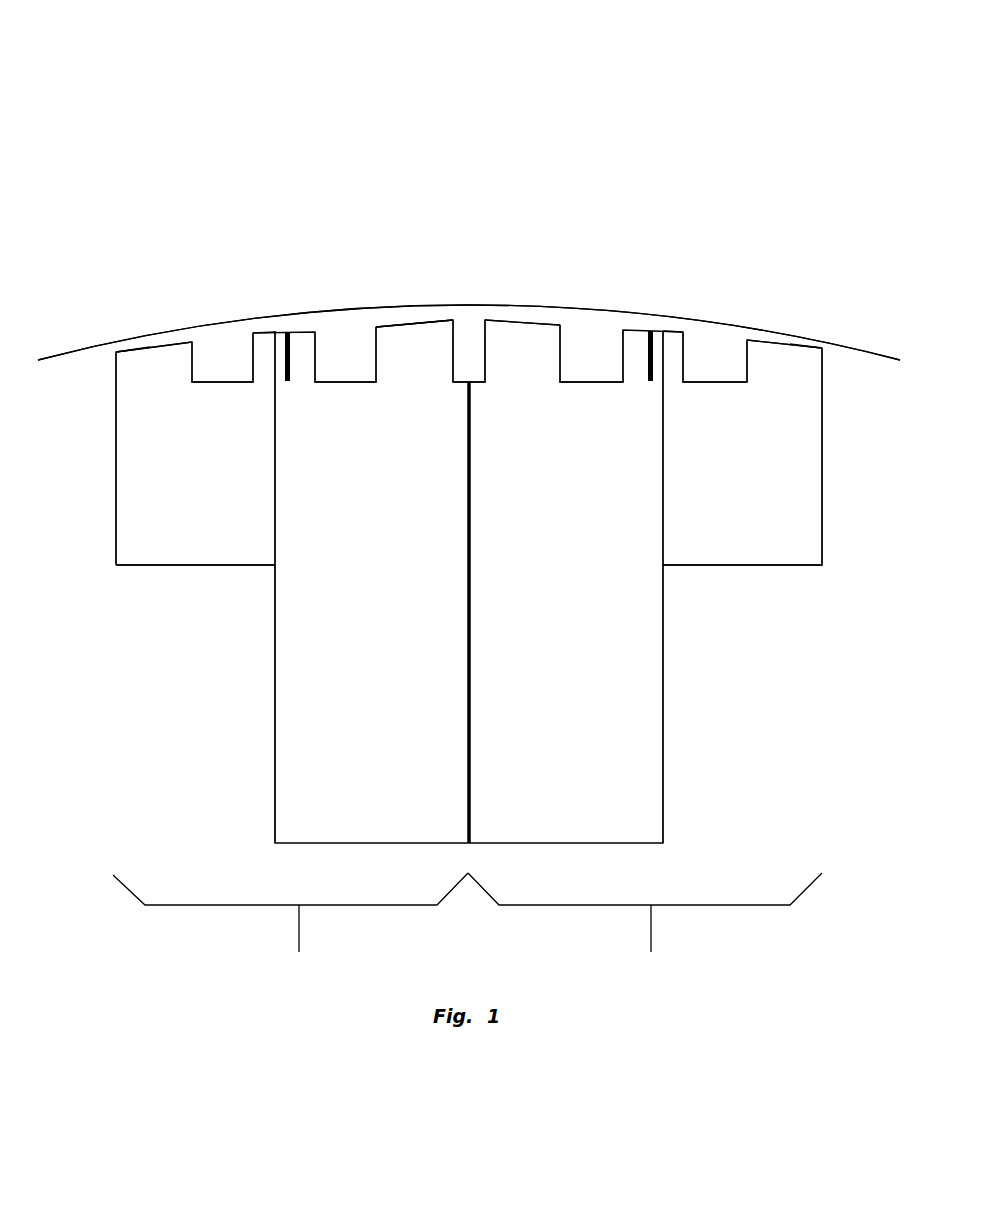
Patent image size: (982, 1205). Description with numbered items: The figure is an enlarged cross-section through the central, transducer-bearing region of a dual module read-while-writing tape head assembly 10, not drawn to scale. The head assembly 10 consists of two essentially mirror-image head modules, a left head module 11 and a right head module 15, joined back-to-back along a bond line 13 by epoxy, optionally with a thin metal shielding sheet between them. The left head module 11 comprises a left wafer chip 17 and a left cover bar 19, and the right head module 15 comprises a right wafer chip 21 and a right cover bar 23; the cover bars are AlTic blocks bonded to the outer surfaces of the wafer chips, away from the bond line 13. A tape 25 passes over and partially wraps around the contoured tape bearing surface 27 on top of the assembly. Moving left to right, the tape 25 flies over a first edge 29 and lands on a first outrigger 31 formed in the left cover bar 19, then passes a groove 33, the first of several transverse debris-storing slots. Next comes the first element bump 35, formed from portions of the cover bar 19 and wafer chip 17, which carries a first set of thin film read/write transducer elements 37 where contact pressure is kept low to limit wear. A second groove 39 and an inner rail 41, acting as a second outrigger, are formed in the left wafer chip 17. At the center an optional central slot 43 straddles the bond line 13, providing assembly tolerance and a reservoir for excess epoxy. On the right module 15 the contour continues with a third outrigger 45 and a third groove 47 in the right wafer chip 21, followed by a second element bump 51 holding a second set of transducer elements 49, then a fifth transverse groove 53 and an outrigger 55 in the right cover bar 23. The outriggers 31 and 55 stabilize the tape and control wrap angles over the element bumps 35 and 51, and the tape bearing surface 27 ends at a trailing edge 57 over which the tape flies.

The RWW head assembly 10 is at (252, 98).
The left head module 11 is at (290, 929).
The bond line 13 is at (472, 660).
The right head module 15 is at (645, 929).
The left wafer chip 17 is at (273, 667).
The left cover bar 19 is at (189, 569).
The right wafer chip 21 is at (664, 667).
The right cover bar 23 is at (749, 569).
The tape 25 is at (159, 331).
The tape bearing surface 27 is at (397, 320).
The first edge 29 is at (111, 354).
The first outrigger 31 is at (148, 355).
The groove 33 is at (222, 385).
The first element bump 35 is at (268, 337).
The first set of thin film read/write transducer elements 37 is at (291, 384).
The second groove 39 is at (348, 385).
The inner rail 41 is at (396, 328).
The central slot 43 is at (485, 386).
The third outrigger 45 is at (498, 325).
The third groove 47 is at (594, 385).
The second set of thin film read/write transducer elements 49 is at (649, 385).
The second element bump 51 is at (670, 337).
The fifth transverse groove 53 is at (718, 385).
The outrigger 55 is at (805, 349).
The trailing edge 57 is at (830, 354).